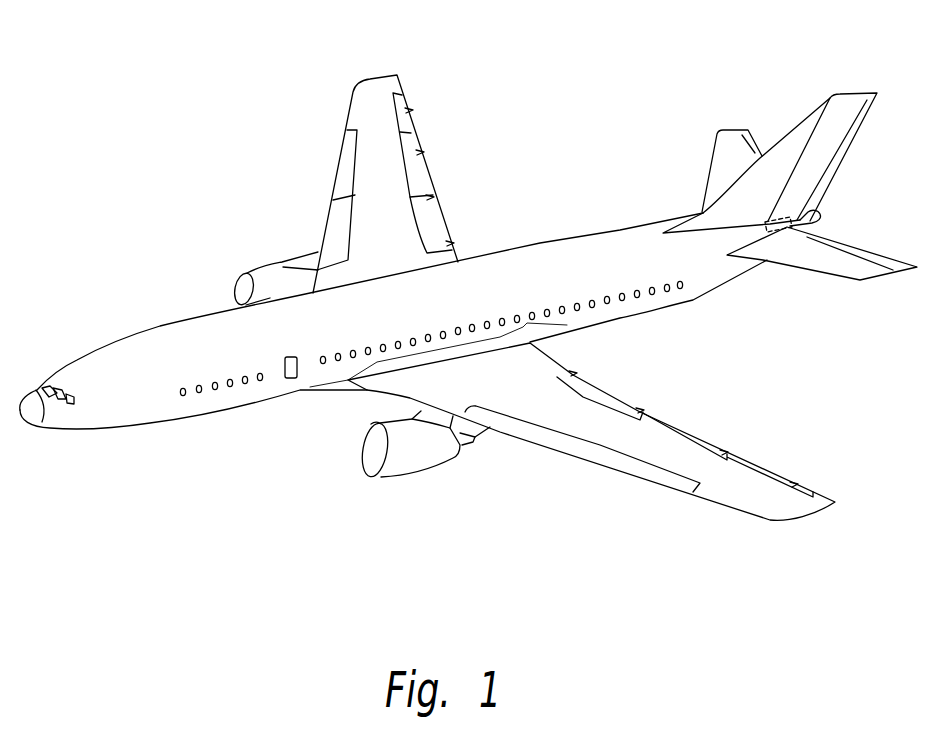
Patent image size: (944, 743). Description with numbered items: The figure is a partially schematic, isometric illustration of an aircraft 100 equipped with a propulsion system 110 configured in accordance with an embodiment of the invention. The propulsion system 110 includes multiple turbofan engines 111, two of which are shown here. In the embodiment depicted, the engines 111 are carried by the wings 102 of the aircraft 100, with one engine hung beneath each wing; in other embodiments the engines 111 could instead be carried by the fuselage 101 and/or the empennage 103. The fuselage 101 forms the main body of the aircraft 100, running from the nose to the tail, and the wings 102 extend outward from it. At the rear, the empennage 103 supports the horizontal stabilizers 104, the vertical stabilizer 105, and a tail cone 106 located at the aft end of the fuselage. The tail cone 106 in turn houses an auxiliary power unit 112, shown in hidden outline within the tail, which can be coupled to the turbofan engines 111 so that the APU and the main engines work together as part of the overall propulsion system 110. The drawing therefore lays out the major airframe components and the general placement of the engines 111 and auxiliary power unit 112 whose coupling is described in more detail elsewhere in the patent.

The aircraft 100 is at (147, 168).
The fuselage 101 is at (284, 390).
The wings 102 is at (350, 108).
The empennage 103 is at (630, 208).
The horizontal stabilizers 104 is at (723, 140).
The vertical stabilizer 105 is at (817, 124).
The tail cone 106 is at (810, 208).
The propulsion system 110 is at (308, 506).
The turbofan engines 111 is at (240, 273).
The auxiliary power unit (APU) 112 is at (772, 228).